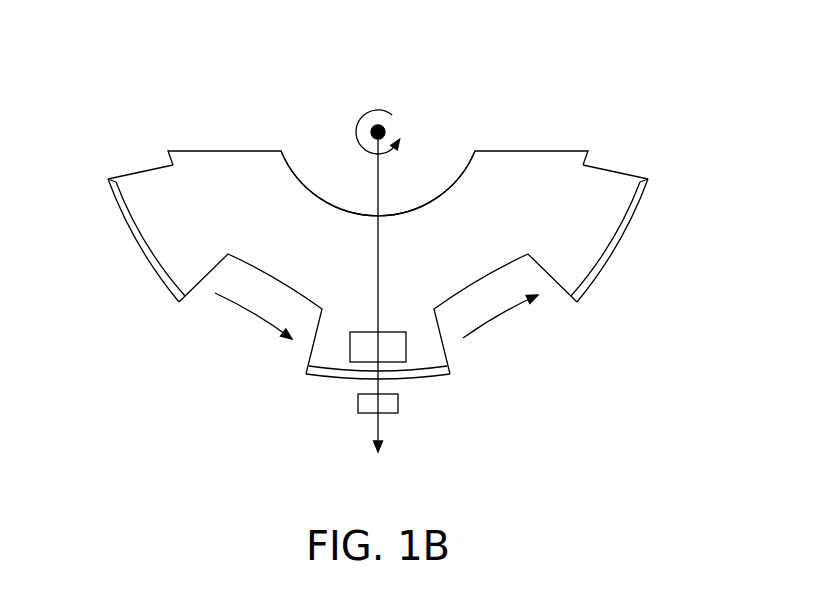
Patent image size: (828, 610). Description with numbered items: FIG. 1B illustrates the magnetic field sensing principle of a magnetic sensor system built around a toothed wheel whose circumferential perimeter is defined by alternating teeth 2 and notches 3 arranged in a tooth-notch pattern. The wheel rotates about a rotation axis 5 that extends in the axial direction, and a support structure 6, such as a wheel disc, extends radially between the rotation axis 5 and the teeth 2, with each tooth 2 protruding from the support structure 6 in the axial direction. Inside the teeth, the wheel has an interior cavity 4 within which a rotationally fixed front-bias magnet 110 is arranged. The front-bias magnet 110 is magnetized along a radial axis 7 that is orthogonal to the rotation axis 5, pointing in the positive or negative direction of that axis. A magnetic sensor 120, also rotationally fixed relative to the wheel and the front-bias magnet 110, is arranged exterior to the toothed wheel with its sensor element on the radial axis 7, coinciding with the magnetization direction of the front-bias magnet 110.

The teeth 2 is at (130, 237).
The notches 3 is at (242, 340).
The interior cavity 4 is at (316, 251).
The rotation axis 5 is at (377, 124).
The support structure 6 is at (432, 197).
The radial axis 7 is at (378, 180).
The front-bias magnet 110 is at (350, 340).
The magnetic sensor 120 is at (388, 413).